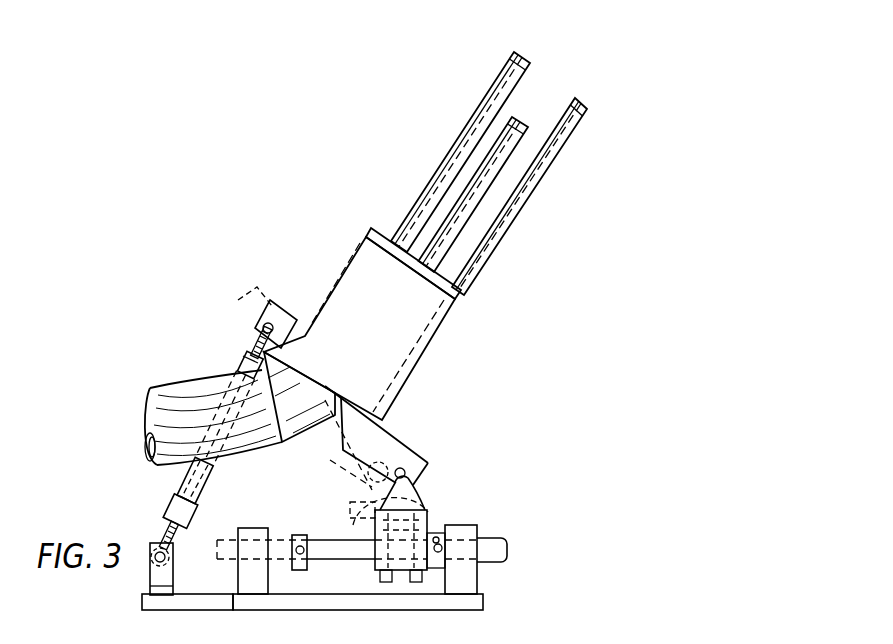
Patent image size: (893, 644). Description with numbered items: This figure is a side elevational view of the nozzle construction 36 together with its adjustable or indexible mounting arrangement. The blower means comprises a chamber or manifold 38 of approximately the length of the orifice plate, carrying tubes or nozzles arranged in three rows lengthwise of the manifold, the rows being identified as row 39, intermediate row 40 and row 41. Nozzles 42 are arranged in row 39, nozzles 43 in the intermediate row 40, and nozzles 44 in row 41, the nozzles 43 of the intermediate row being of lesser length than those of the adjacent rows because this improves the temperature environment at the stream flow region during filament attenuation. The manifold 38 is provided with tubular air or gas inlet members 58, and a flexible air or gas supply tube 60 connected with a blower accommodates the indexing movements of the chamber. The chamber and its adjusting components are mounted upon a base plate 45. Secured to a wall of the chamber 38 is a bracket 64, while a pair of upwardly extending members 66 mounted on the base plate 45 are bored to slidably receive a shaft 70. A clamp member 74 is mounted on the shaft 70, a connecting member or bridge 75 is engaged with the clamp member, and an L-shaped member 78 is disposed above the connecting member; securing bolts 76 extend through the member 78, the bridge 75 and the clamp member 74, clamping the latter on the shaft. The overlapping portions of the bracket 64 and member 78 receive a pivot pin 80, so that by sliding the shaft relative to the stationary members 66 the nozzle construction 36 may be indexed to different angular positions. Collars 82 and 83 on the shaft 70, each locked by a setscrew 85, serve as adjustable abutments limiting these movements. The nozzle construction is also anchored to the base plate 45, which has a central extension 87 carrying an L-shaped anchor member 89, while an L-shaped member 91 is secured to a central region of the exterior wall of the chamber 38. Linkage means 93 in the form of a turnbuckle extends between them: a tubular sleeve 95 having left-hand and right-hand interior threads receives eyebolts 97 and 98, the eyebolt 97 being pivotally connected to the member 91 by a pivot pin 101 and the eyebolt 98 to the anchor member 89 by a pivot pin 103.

The nozzle construction 36 is at (377, 226).
The chamber or manifold 38 is at (448, 318).
The row of nozzles 39 is at (534, 51).
The intermediate row of nozzles 40 is at (526, 112).
The row of nozzles 41 is at (590, 100).
The nozzles 42 is at (479, 103).
The nozzles 43 is at (498, 146).
The nozzles 44 is at (556, 152).
The base plate 45 is at (476, 603).
The tubular inlet member 58 is at (292, 442).
The air or gas supply tube 60 is at (180, 388).
The bracket 64 is at (394, 420).
The upwardly extending member 66 is at (248, 530).
The shaft 70 is at (500, 540).
The clamp member 74 is at (400, 572).
The connecting member or bridge 75 is at (365, 520).
The securing bolt 76 is at (365, 504).
The L-shaped member 78 is at (431, 532).
The pivot pin 80 is at (401, 466).
The collar 82 is at (442, 545).
The collar 83 is at (303, 538).
The setscrew 85 is at (300, 546).
The central extension 87 is at (143, 604).
The L-shaped anchor member 89 is at (150, 566).
The L-shaped member 91 is at (291, 306).
The linkage means 93 is at (235, 362).
The tubular rod or sleeve 95 is at (184, 488).
The eyebolt 97 is at (258, 346).
The eyebolt 98 is at (176, 516).
The pivot pin 101 is at (270, 322).
The pivot pin 103 is at (154, 550).